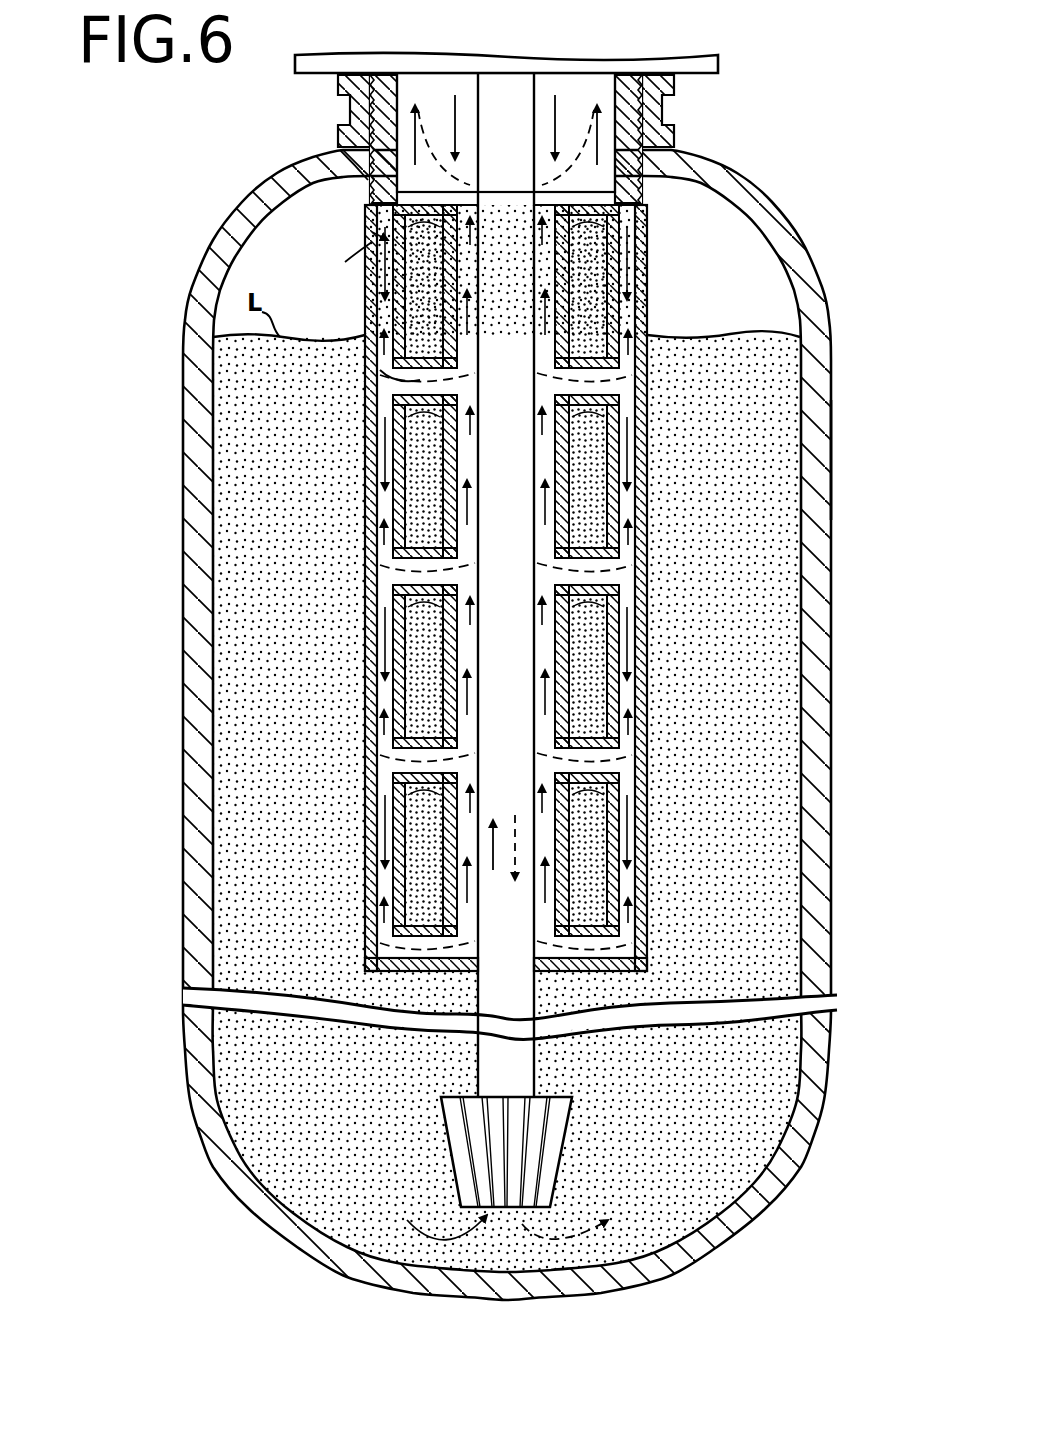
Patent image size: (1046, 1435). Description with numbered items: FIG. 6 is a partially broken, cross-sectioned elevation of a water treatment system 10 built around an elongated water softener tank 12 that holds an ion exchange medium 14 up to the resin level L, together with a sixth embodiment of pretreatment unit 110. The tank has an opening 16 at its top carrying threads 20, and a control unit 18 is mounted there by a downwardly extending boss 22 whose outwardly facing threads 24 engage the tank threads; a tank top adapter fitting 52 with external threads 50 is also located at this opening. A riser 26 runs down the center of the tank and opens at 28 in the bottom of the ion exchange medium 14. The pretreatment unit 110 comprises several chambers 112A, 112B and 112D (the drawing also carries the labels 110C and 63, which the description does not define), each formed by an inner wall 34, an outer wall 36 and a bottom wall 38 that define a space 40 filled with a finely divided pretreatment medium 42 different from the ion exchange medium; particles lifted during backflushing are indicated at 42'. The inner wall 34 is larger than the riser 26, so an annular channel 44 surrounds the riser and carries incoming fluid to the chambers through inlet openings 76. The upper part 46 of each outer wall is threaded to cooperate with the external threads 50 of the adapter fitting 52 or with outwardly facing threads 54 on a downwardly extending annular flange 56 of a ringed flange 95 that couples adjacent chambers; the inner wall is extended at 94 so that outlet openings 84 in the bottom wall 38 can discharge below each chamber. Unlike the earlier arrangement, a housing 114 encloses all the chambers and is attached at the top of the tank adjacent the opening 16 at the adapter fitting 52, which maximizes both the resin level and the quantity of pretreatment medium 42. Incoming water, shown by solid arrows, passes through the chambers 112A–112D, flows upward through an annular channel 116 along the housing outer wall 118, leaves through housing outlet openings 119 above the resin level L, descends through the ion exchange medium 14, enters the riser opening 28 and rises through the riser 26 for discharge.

The water treatment system 10 is at (792, 200).
The water softener tank 12 is at (833, 472).
The ion exchange medium 14 is at (782, 677).
The opening 16 is at (368, 194).
The control unit 18 is at (716, 70).
The threads 20 is at (352, 140).
The boss 22 is at (398, 115).
The outwardly facing threads 24 is at (664, 108).
The riser 26 is at (518, 1067).
The riser opening 28 is at (511, 1208).
The inner wall 34 is at (478, 316).
The outer wall 36 is at (395, 332).
The bottom wall 38 is at (395, 372).
The space 40 is at (415, 361).
The pretreatment water treatment medium 42 is at (633, 577).
The lifted pretreatment medium particles 42' is at (668, 226).
The annular channel 44 is at (533, 518).
The upper part of outer wall 46 is at (382, 212).
The external threads 50 is at (457, 212).
The tank top adapter fitting 52 is at (690, 148).
The outwardly facing threads 54 is at (620, 406).
The downwardly extending annular flange 56 is at (605, 433).
The nut 63 is at (340, 93).
The inlet openings 76 is at (456, 268).
The outlet openings 84 is at (568, 378).
The inner wall extension 94 is at (470, 415).
The ringed flange 95 is at (600, 375).
The pretreatment unit 110 is at (660, 335).
The shell section 110C is at (630, 677).
The chamber 112A is at (640, 268).
The chamber 112B is at (640, 445).
The chamber 112D is at (635, 893).
The housing 114 is at (615, 385).
The annular channel 116 is at (640, 510).
The outer wall of housing 118 is at (625, 589).
The housing outlet openings 119 is at (372, 240).